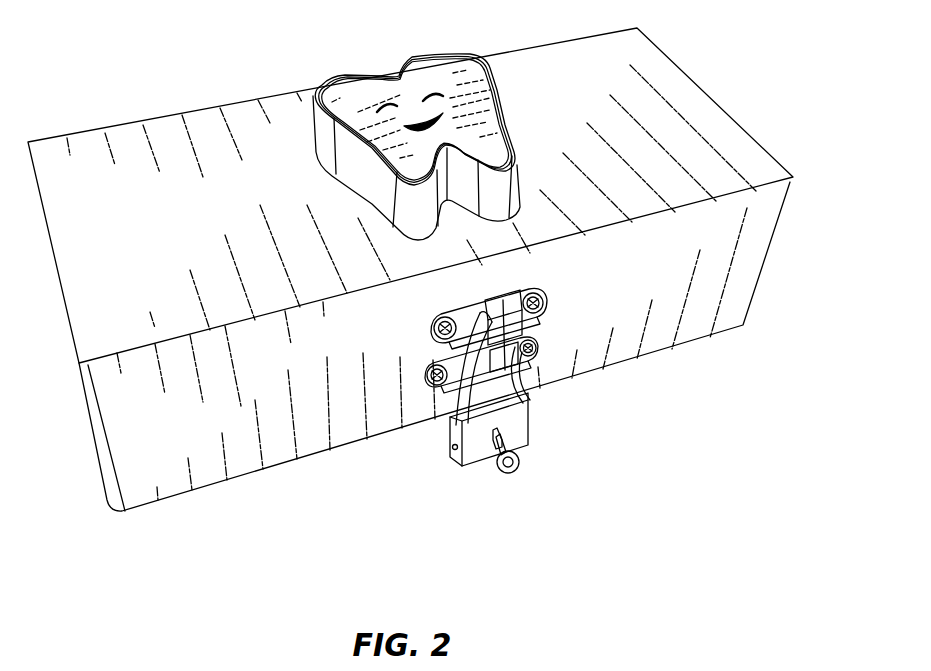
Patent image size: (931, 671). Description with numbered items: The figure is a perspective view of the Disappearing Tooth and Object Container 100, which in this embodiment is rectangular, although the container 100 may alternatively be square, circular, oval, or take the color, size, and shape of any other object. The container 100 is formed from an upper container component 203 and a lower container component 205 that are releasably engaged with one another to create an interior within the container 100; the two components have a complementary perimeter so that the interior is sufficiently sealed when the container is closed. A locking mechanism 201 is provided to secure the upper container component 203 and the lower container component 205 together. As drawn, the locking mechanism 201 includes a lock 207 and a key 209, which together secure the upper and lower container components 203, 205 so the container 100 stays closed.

The tooth and object container 100 is at (291, 52).
The locking mechanism 201 is at (528, 405).
The upper container component 203 is at (47, 233).
The lower container component 205 is at (225, 482).
The lock 207 is at (463, 462).
The key 209 is at (522, 462).